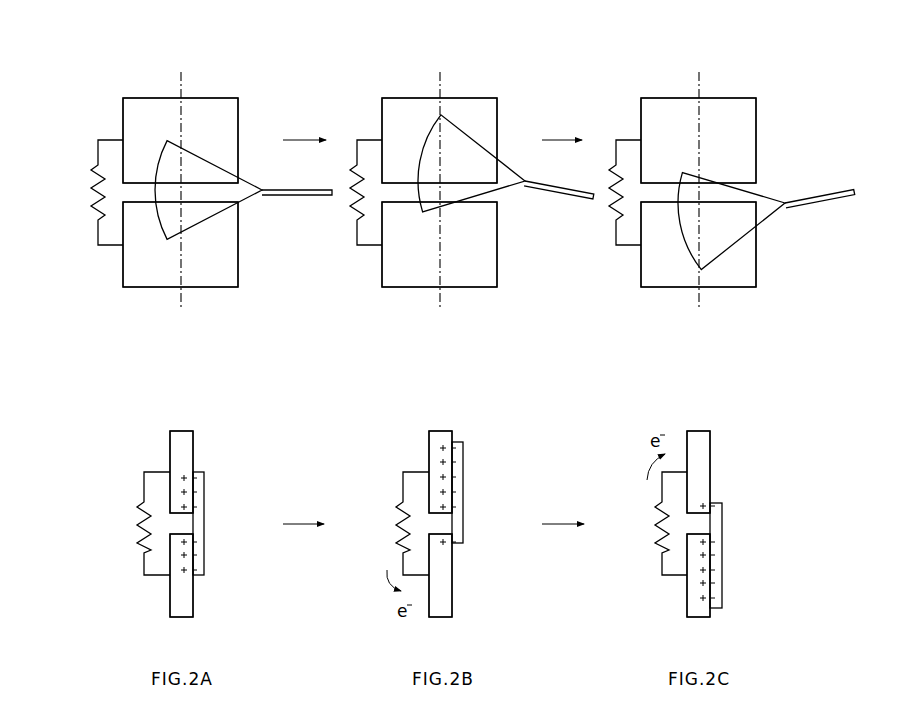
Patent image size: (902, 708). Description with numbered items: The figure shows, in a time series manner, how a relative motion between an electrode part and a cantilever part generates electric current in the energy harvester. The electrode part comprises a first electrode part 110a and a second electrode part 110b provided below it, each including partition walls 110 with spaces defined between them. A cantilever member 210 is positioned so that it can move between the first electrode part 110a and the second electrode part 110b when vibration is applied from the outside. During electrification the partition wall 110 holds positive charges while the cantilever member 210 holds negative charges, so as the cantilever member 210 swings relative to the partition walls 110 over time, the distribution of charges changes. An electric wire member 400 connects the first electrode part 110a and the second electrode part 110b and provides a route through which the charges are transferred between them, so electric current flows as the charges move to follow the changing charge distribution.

In FIG. 2A, the partition wall 110 is at (210, 105).
In FIG. 2B, the partition wall 110 is at (469, 105).
In FIG. 2C, the partition wall 110 is at (728, 105).
In FIG. 2A, the first electrode part 110a is at (145, 78).
In FIG. 2B, the first electrode part 110a is at (404, 78).
In FIG. 2C, the first electrode part 110a is at (663, 78).
In FIG. 2A, the second electrode part 110b is at (113, 283).
In FIG. 2B, the second electrode part 110b is at (372, 283).
In FIG. 2C, the second electrode part 110b is at (631, 283).
In FIG. 2A, the cantilever member 210 is at (259, 163).
In FIG. 2B, the cantilever member 210 is at (519, 148).
In FIG. 2C, the cantilever member 210 is at (776, 183).
In FIG. 2A, the electric wire member 400 is at (98, 232).
In FIG. 2B, the electric wire member 400 is at (357, 232).
In FIG. 2C, the electric wire member 400 is at (616, 232).